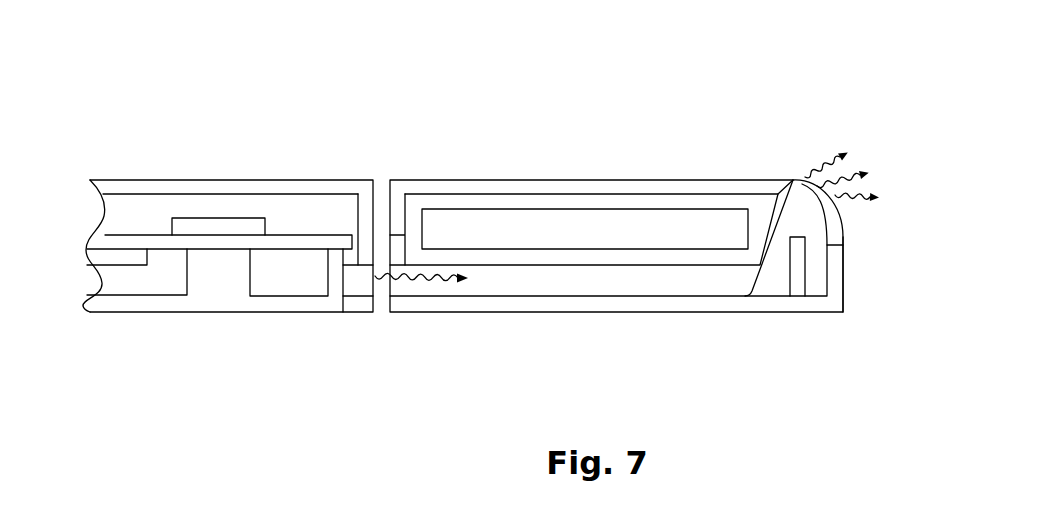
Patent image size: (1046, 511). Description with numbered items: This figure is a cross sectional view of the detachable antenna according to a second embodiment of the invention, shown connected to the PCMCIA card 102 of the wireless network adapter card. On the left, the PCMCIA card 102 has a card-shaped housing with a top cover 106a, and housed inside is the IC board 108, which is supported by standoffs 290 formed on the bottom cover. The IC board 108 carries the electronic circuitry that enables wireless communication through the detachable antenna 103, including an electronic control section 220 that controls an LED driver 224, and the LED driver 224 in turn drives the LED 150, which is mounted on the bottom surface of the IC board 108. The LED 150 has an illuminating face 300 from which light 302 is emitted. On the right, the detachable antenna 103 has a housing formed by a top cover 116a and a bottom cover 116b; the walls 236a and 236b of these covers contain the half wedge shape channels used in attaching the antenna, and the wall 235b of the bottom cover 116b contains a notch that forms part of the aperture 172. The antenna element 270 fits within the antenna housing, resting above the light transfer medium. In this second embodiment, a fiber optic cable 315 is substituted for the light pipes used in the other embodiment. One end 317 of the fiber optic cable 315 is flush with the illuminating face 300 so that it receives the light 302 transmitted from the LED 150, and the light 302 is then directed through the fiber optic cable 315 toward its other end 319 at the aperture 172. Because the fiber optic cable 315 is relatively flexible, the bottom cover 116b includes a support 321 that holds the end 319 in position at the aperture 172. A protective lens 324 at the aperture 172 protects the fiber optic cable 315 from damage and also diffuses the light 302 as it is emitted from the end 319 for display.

The PCMCIA card 102 is at (233, 117).
The detachable antenna 103 is at (477, 157).
The top cover 106a is at (123, 187).
The IC board 108 is at (105, 240).
The top cover 116a is at (528, 188).
The bottom cover 116b is at (683, 305).
The LED 150 is at (350, 283).
The aperture 172 is at (858, 247).
The electronic control section 220 is at (125, 260).
The LED driver 224 is at (220, 226).
The wall 235b is at (843, 290).
The wall 236a is at (366, 218).
The wall 236b is at (367, 250).
The antenna element 270 is at (625, 228).
The standoffs 290 is at (236, 272).
The illuminating face 300 is at (370, 281).
The light 302 is at (423, 271).
The fiber optic cable 315 is at (560, 283).
The end 317 is at (391, 285).
The end 319 is at (783, 208).
The support 321 is at (798, 279).
The protective lens 324 is at (802, 190).